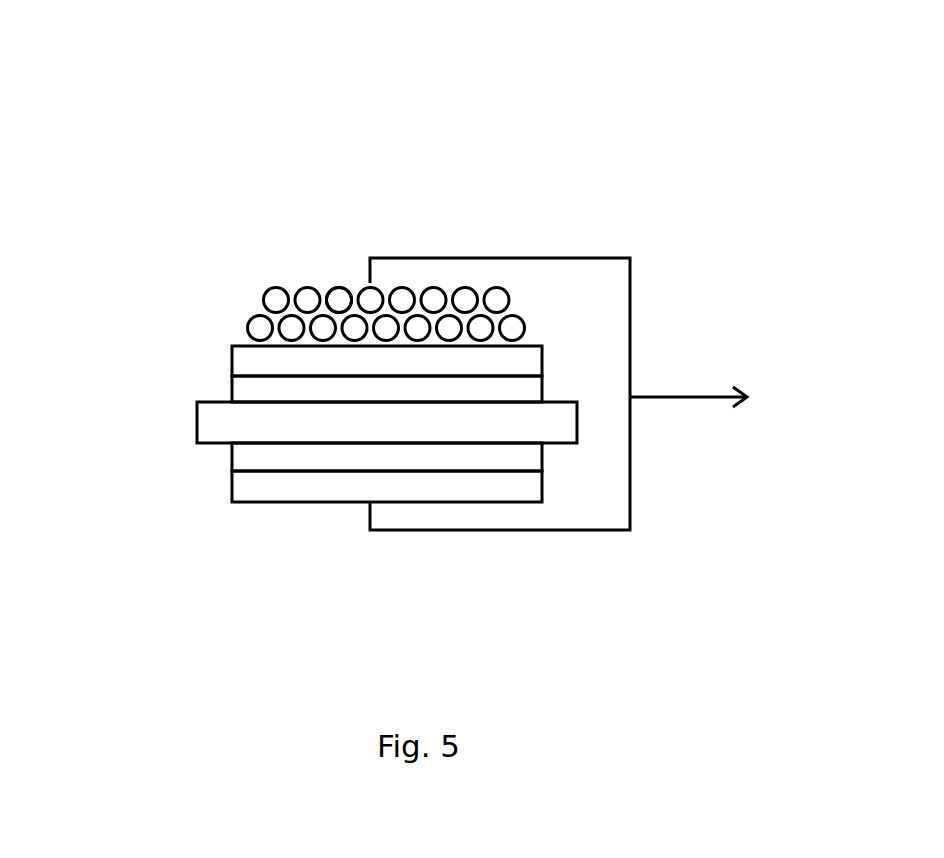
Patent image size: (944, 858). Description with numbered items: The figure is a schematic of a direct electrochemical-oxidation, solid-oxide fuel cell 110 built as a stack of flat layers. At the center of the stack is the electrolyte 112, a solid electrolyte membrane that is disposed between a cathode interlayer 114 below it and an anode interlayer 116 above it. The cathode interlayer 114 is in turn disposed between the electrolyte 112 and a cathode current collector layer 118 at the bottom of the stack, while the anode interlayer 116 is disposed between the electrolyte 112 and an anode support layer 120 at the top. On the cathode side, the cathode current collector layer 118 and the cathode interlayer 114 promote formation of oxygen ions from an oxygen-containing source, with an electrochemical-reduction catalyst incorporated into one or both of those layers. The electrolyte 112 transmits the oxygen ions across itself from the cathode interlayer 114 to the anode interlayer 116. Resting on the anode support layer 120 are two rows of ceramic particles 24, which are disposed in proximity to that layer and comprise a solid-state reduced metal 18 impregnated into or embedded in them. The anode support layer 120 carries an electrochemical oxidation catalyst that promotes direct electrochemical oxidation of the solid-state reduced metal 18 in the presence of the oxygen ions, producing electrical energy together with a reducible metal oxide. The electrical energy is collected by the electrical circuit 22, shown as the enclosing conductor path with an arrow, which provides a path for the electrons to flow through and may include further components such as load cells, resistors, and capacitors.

The direct electrochemical-oxidation, solid-oxide fuel cell 110 is at (597, 195).
The electrical circuit 22 is at (672, 397).
The solid-state reduced metal 18 is at (307, 303).
The ceramic particles 24 is at (337, 290).
The anode support layer 120 is at (230, 349).
The anode interlayer 116 is at (231, 385).
The electrolyte 112 is at (197, 427).
The cathode current collector layer 118 is at (232, 490).
The cathode interlayer 114 is at (232, 453).